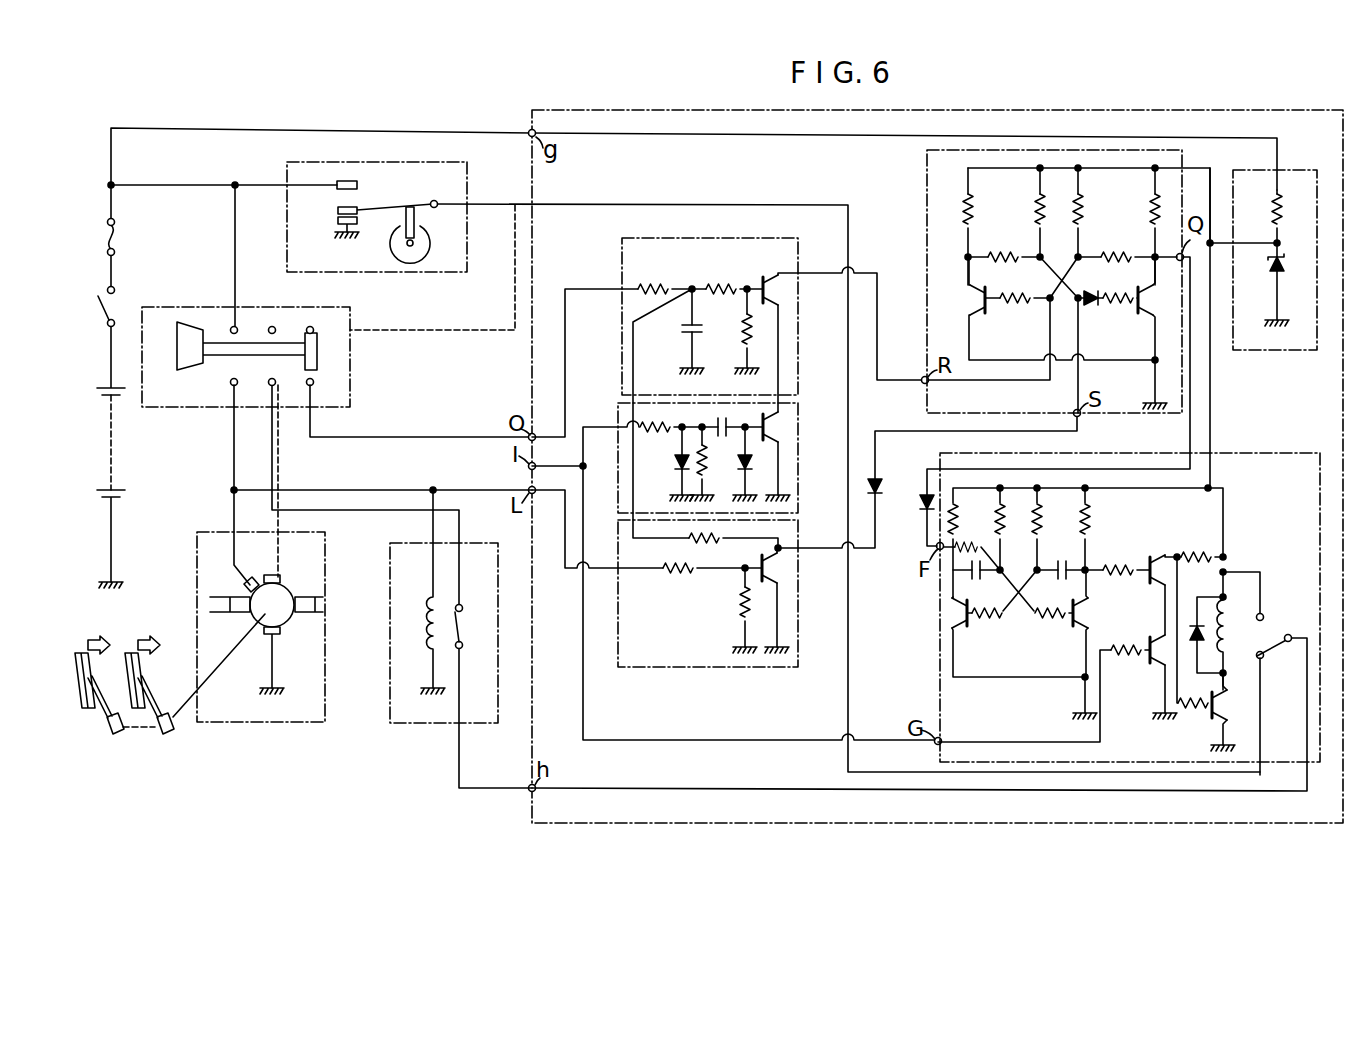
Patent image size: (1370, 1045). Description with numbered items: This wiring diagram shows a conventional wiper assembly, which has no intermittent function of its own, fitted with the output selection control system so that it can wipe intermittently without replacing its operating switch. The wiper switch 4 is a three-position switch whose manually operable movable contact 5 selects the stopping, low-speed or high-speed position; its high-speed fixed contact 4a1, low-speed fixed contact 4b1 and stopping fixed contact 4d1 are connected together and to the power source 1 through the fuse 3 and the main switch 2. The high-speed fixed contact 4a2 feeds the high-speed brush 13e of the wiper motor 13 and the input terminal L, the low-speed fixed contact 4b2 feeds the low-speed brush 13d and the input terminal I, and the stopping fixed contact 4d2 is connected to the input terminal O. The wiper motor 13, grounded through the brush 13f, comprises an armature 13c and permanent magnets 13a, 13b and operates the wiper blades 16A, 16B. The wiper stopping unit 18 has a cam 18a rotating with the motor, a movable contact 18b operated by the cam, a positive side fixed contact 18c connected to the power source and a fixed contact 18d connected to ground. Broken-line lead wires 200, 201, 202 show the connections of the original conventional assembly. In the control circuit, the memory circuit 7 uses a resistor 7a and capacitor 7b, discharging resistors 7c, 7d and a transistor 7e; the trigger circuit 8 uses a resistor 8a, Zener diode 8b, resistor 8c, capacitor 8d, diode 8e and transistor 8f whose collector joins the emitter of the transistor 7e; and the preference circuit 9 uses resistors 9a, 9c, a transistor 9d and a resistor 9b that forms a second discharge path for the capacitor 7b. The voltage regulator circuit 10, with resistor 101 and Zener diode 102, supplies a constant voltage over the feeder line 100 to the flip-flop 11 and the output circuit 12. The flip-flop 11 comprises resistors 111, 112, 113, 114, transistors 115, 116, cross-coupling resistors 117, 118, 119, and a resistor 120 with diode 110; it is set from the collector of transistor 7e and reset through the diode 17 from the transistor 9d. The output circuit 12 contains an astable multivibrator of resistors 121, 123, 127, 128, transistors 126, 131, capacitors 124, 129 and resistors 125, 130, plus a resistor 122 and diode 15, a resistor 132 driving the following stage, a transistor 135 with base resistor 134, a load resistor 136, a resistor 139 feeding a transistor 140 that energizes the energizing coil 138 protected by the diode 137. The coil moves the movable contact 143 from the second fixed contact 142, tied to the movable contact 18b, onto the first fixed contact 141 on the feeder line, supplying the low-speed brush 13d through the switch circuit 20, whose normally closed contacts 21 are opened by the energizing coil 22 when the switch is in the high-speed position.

The power source 1 is at (108, 433).
The main switch 2 is at (106, 316).
The fuse 3 is at (108, 233).
The wiper switch 4 is at (230, 407).
The high-speed fixed contact 4a1 is at (250, 320).
The high-speed fixed contact 4a2 is at (231, 371).
The low-speed fixed contact 4b1 is at (287, 320).
The low-speed fixed contact 4b2 is at (269, 371).
The stopping fixed contact 4d1 is at (318, 320).
The stopping fixed contact 4d2 is at (329, 371).
The movable contact 5 is at (177, 340).
The memory circuit 7 is at (620, 368).
The resistor 7a is at (665, 271).
The capacitor 7b is at (682, 327).
The resistor 7c is at (727, 271).
The resistor 7d is at (745, 328).
The transistor 7e is at (772, 292).
The trigger circuit 8 is at (618, 500).
The resistor 8a is at (652, 422).
The Zener diode 8b is at (674, 462).
The resistor 8c is at (712, 449).
The capacitor 8d is at (722, 418).
The diode 8e is at (745, 470).
The transistor 8f is at (775, 427).
The preference circuit 9 is at (618, 612).
The resistor 9a is at (683, 575).
The resistor 9b is at (690, 543).
The resistor 9c is at (744, 603).
The transistor 9d is at (780, 573).
The voltage regulator circuit 10 is at (1240, 352).
The flip-flop 11 is at (925, 225).
The output circuit 12 is at (938, 696).
The wiper motor 13 is at (312, 724).
The permanent magnet 13a is at (237, 613).
The permanent magnet 13b is at (303, 613).
The armature 13c is at (294, 600).
The low-speed brush 13d is at (280, 577).
The high-speed brush 13e is at (252, 578).
The brush 13f is at (278, 636).
The diode 15 is at (920, 504).
The wiper blade 16A is at (78, 702).
The wiper blade 16B is at (130, 702).
The diode 17 is at (883, 488).
The wiper stopping unit 18 is at (466, 228).
The cam 18a is at (430, 240).
The movable contact 18b is at (341, 211).
The positive side fixed contact 18c is at (357, 184).
The fixed contact 18d is at (340, 223).
The switch circuit 20 is at (395, 725).
The normally closed contacts 21 is at (463, 632).
The energizing coil 22 is at (428, 620).
The feeder line 100 is at (1218, 181).
The resistor 101 is at (1283, 226).
The Zener diode 102 is at (1286, 267).
The diode 110 is at (1090, 306).
The resistor 111 is at (973, 210).
The resistor 112 is at (1035, 215).
The resistor 113 is at (1082, 210).
The resistor 114 is at (1150, 212).
The transistor 115 is at (983, 300).
The transistor 116 is at (1142, 300).
The resistor 117 is at (1018, 302).
The resistor 118 is at (1130, 262).
The resistor 119 is at (1000, 262).
The resistor 120 is at (1122, 306).
The resistor 121 is at (953, 510).
The resistor 122 is at (972, 548).
The resistor 123 is at (1002, 524).
The capacitor 124 is at (980, 578).
The resistor 125 is at (992, 616).
The transistor 126 is at (963, 612).
The resistor 127 is at (1040, 524).
The resistor 128 is at (1088, 535).
The capacitor 129 is at (1064, 578).
The resistor 130 is at (1055, 617).
The transistor 131 is at (1082, 612).
The resistor 132 is at (1116, 565).
The resistor 134 is at (1130, 645).
The transistor 135 is at (1153, 654).
The resistor 136 is at (1196, 554).
The diode 137 is at (1190, 625).
The energizing coil 138 is at (1242, 598).
The resistor 139 is at (1195, 709).
The transistor 140 is at (1215, 705).
The first fixed contact 141 is at (1264, 615).
The second fixed contact 142 is at (1264, 657).
The movable contact 143 is at (1272, 648).
The lead wire 200 is at (476, 332).
The lead wire 201 is at (280, 478).
The lead wire 202 is at (314, 388).